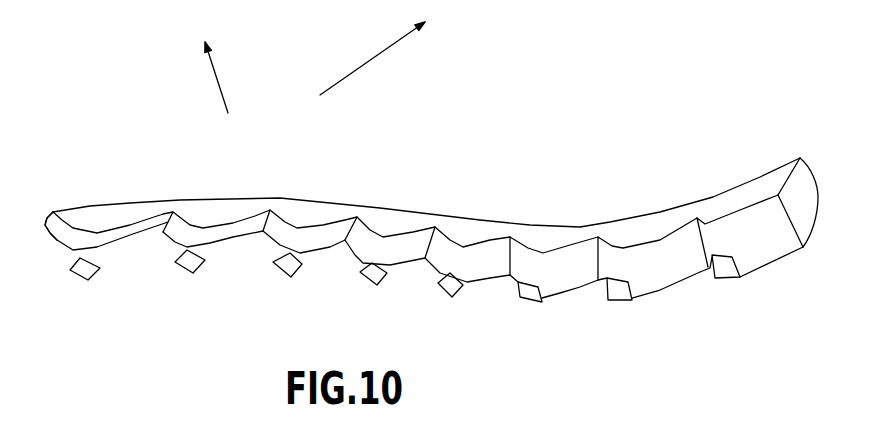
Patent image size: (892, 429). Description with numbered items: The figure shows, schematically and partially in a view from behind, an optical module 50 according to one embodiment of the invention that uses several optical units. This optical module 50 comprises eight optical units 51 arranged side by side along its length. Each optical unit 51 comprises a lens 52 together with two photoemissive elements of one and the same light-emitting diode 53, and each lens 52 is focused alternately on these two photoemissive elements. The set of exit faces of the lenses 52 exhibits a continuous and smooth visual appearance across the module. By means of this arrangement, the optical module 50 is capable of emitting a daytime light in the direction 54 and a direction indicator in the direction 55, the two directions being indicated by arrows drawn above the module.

The optical module 50 is at (431, 281).
The optical unit 51 is at (415, 209).
The lens 52 is at (43, 202).
The light-emitting diode 53 is at (405, 292).
The direction 54 is at (195, 80).
The direction 55 is at (370, 58).